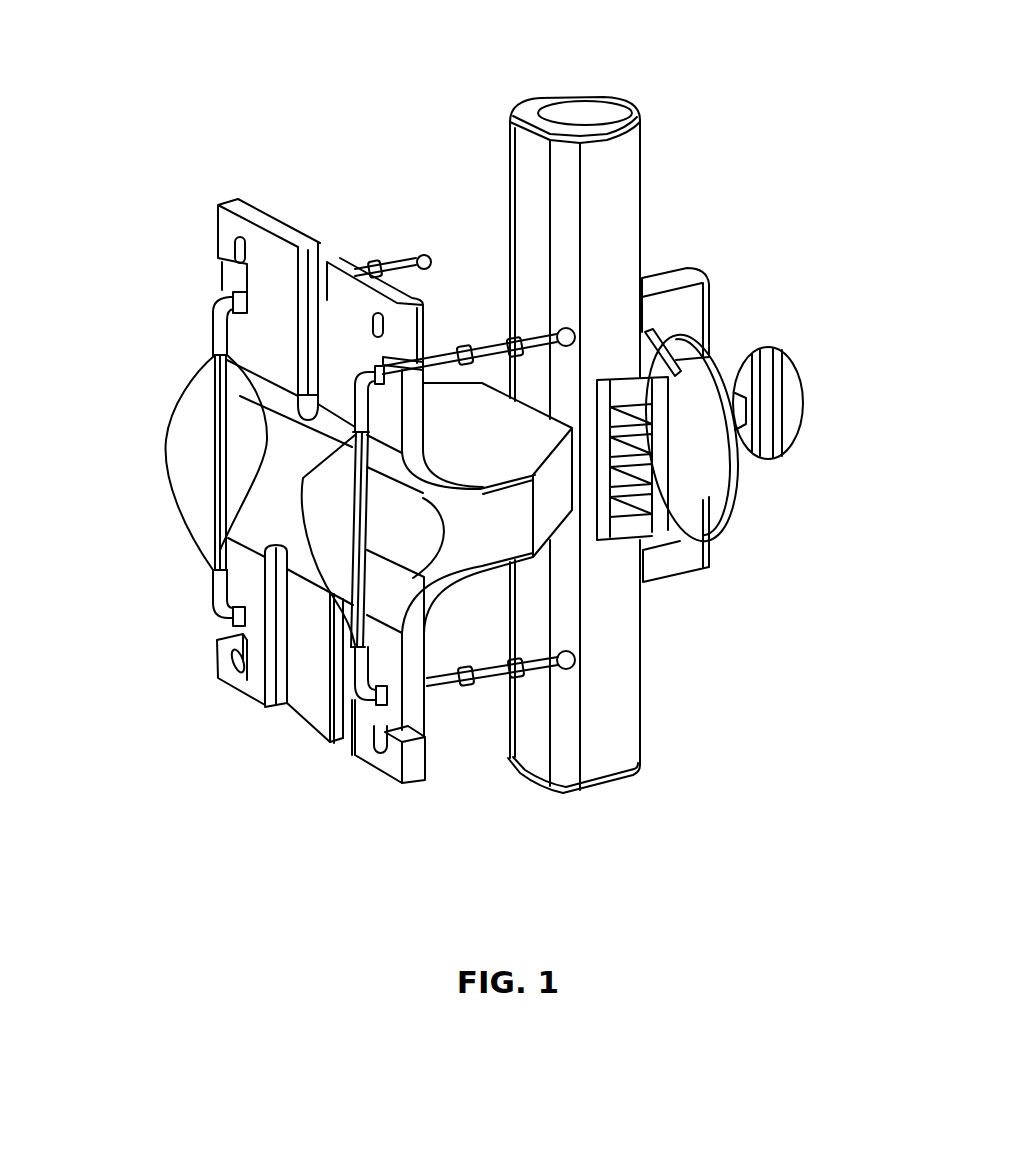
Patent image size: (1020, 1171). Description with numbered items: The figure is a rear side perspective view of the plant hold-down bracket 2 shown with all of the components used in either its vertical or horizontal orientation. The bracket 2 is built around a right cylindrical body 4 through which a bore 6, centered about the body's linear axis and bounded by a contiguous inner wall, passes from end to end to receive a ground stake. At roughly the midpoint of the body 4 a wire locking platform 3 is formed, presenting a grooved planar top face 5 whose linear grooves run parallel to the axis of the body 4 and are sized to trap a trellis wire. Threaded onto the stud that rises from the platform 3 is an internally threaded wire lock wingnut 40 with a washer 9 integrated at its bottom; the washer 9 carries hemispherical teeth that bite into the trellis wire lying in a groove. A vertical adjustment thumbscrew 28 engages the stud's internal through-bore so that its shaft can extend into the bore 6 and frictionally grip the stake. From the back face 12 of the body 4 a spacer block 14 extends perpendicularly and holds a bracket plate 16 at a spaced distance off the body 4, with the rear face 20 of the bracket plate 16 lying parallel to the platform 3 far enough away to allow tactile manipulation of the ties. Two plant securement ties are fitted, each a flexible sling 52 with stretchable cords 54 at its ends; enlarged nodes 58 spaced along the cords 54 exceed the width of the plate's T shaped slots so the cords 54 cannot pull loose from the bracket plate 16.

The plant hold-down bracket 2 is at (137, 685).
The wire locking platform 3 is at (663, 527).
The right cylindrical body 4 is at (628, 186).
The grooved planar top face 5 is at (667, 487).
The bore 6 is at (580, 107).
The washer 9 is at (667, 352).
The back face 12 is at (528, 167).
The spacer block 14 is at (470, 444).
The bracket plate 16 is at (238, 208).
The rear face 20 is at (313, 718).
The vertical adjustment thumbscrew 28 is at (792, 409).
The wire lock wingnut 40 is at (698, 303).
The sling 52 is at (183, 417).
The stretchable cord 54 is at (492, 677).
The enlarged node 58 is at (472, 684).